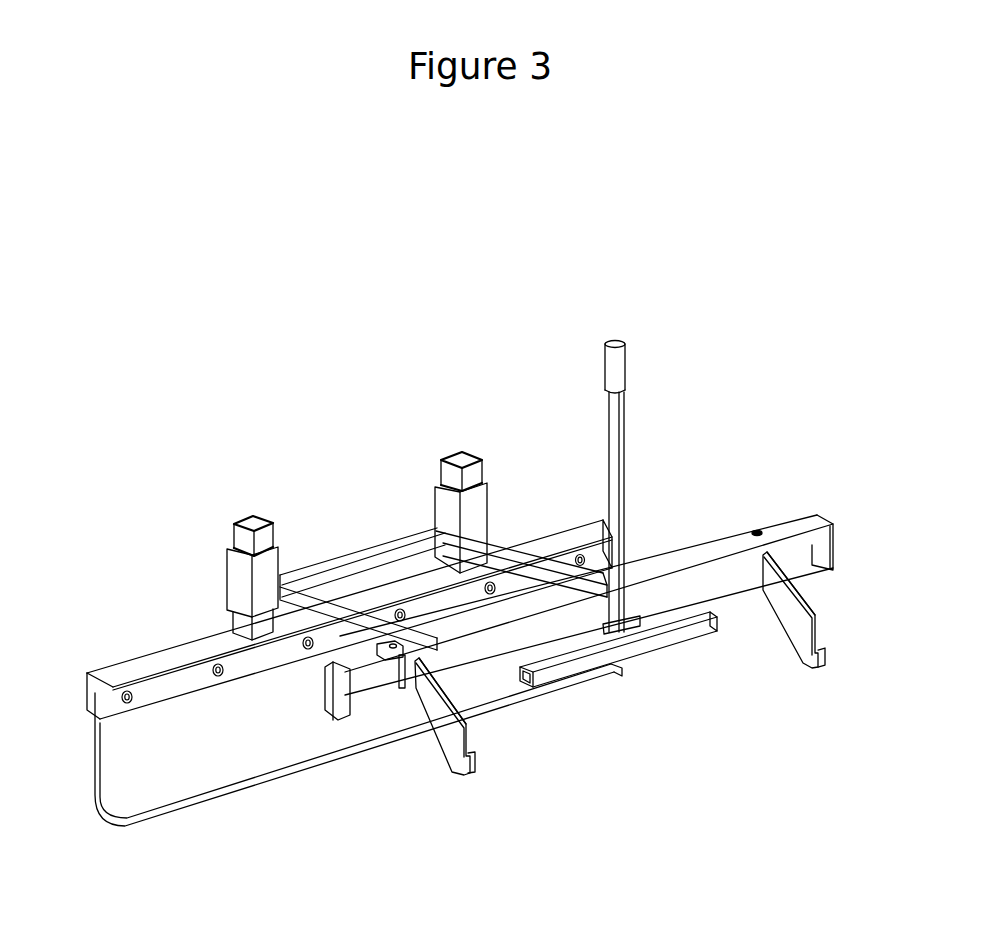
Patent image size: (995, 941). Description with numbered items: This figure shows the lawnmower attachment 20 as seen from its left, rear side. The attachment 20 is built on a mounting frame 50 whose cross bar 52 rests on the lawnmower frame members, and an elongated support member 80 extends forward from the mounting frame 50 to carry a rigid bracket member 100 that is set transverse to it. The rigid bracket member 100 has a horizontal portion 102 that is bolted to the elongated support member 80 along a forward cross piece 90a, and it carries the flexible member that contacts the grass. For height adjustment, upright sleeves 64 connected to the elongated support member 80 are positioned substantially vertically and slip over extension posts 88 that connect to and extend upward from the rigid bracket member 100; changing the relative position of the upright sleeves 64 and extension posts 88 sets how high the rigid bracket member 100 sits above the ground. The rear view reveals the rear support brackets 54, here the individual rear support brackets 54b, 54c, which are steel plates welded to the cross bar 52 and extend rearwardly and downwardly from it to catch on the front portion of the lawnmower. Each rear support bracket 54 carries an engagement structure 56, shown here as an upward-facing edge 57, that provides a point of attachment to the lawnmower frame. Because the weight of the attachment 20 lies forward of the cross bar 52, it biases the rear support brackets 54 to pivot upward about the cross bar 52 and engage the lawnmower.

The attachment 20 is at (255, 415).
The mounting frame 50 is at (548, 618).
The cross bar 52 is at (697, 553).
The rear support brackets 54 is at (405, 757).
The rear support bracket 54b is at (457, 740).
The side plate 54c is at (805, 625).
The engagement structure 56 is at (470, 755).
The upward-facing edge 57 is at (452, 690).
The upright sleeves 64 is at (232, 557).
The elongated support member 80 is at (487, 548).
The extension posts 88 is at (239, 530).
The forward cross piece 90a is at (348, 560).
The rigid bracket member 100 is at (170, 653).
The horizontal portion 102 is at (133, 673).